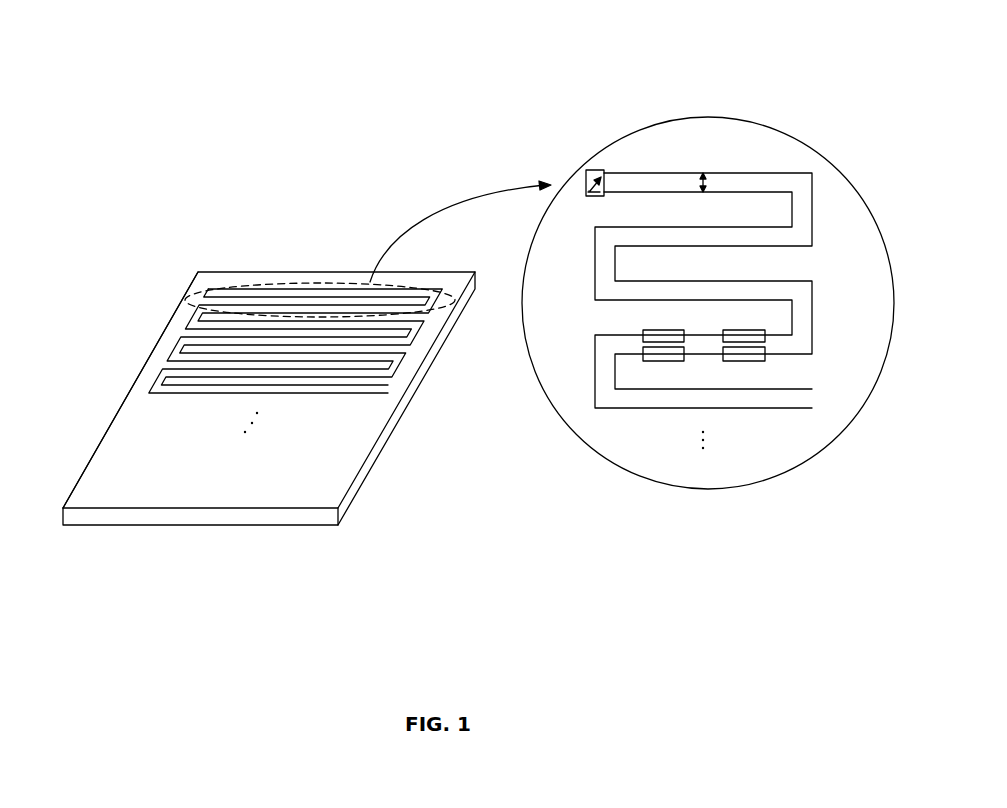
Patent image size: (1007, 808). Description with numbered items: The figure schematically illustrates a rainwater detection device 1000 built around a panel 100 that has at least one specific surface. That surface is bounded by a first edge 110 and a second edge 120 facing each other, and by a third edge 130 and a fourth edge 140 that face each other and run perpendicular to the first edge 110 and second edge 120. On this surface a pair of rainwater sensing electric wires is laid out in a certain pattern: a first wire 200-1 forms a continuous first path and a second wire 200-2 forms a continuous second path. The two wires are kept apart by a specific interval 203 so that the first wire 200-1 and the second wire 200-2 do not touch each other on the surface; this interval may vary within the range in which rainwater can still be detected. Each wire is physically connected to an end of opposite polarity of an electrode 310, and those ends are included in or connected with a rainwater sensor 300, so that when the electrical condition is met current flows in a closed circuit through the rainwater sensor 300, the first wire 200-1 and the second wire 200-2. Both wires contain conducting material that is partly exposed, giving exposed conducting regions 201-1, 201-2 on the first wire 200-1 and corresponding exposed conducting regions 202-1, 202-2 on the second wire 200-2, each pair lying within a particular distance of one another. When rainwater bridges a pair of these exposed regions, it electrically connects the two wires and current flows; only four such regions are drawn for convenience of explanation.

The rainwater detection device 1000 is at (300, 33).
The panel 100 is at (371, 478).
The first edge 110 is at (132, 392).
The second edge 120 is at (408, 388).
The third edge 130 is at (302, 268).
The fourth edge 140 is at (201, 508).
The first wire 200-1 is at (812, 207).
The second wire 200-2 is at (792, 207).
The exposed conducting region 201-1 is at (765, 361).
The exposed conducting region 201-2 is at (684, 361).
The exposed conducting region 202-1 is at (722, 331).
The exposed conducting region 202-2 is at (640, 331).
The specific interval 203 is at (708, 178).
The rainwater sensor 300 is at (605, 171).
The electrode 310 is at (586, 192).